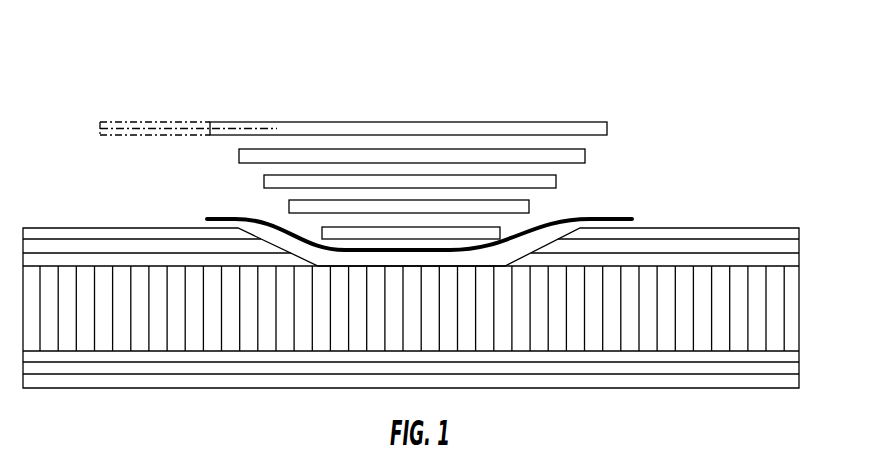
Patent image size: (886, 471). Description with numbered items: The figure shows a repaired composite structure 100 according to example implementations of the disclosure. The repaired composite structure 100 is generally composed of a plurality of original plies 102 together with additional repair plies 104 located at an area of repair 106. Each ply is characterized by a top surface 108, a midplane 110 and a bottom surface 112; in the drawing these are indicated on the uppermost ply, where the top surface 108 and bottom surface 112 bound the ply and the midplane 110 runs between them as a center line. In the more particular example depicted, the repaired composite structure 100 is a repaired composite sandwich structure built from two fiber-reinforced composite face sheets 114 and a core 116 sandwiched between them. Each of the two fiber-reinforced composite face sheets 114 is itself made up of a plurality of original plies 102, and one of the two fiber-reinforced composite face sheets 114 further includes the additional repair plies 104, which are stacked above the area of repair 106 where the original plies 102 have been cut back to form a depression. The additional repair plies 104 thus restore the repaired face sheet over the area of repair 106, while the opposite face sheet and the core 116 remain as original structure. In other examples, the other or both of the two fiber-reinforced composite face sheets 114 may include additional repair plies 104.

The repaired composite structure 100 is at (343, 82).
The original plies 102 is at (734, 210).
The additional repair plies 104 is at (531, 207).
The area of repair 106 is at (328, 257).
The top surface 108 is at (175, 120).
The midplane 110 is at (117, 121).
The bottom surface 112 is at (168, 137).
The fiber-reinforced composite face sheets 114 is at (805, 229).
The core 116 is at (805, 267).